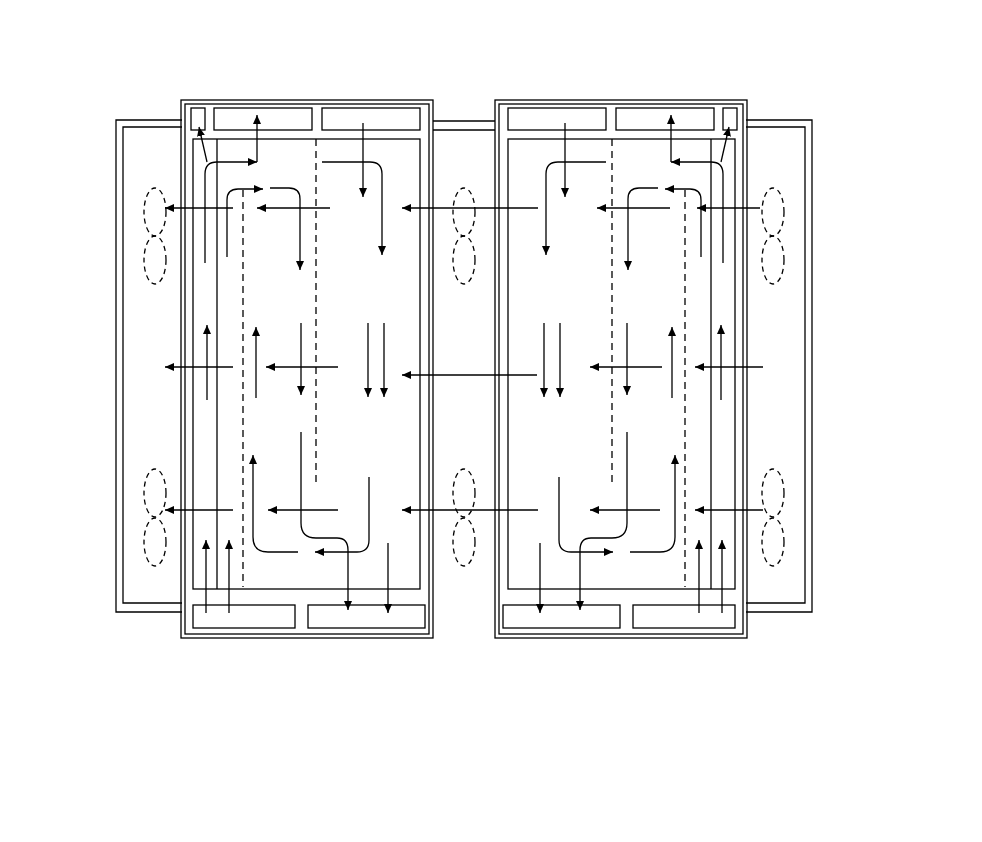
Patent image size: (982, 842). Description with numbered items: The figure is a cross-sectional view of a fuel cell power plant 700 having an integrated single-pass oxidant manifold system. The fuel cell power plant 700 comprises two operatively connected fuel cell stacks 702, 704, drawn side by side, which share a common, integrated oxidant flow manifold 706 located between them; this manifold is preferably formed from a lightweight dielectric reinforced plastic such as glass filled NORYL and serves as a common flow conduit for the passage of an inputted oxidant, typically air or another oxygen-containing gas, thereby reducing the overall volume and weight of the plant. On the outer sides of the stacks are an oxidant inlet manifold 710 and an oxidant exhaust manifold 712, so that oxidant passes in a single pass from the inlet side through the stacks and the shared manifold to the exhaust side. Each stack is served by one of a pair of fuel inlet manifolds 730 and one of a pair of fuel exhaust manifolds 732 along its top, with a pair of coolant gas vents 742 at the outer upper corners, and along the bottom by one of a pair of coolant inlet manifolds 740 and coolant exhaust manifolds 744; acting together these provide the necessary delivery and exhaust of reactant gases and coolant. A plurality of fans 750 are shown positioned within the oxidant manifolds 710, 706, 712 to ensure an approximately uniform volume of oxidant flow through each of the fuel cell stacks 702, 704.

The fuel cell power plant 700 is at (102, 106).
The fuel cell stack 702 is at (308, 89).
The fuel cell stack 704 is at (661, 82).
The integrated oxidant flow manifold 706 is at (469, 106).
The oxidant inlet manifold 710 is at (783, 327).
The oxidant exhaust manifold 712 is at (135, 303).
The fuel inlet manifold 730 is at (400, 118).
The fuel exhaust manifold 732 is at (238, 114).
The coolant inlet manifold 740 is at (250, 621).
The coolant gas vent 742 is at (196, 108).
The coolant exhaust manifold 744 is at (371, 621).
The fan 750 is at (783, 212).